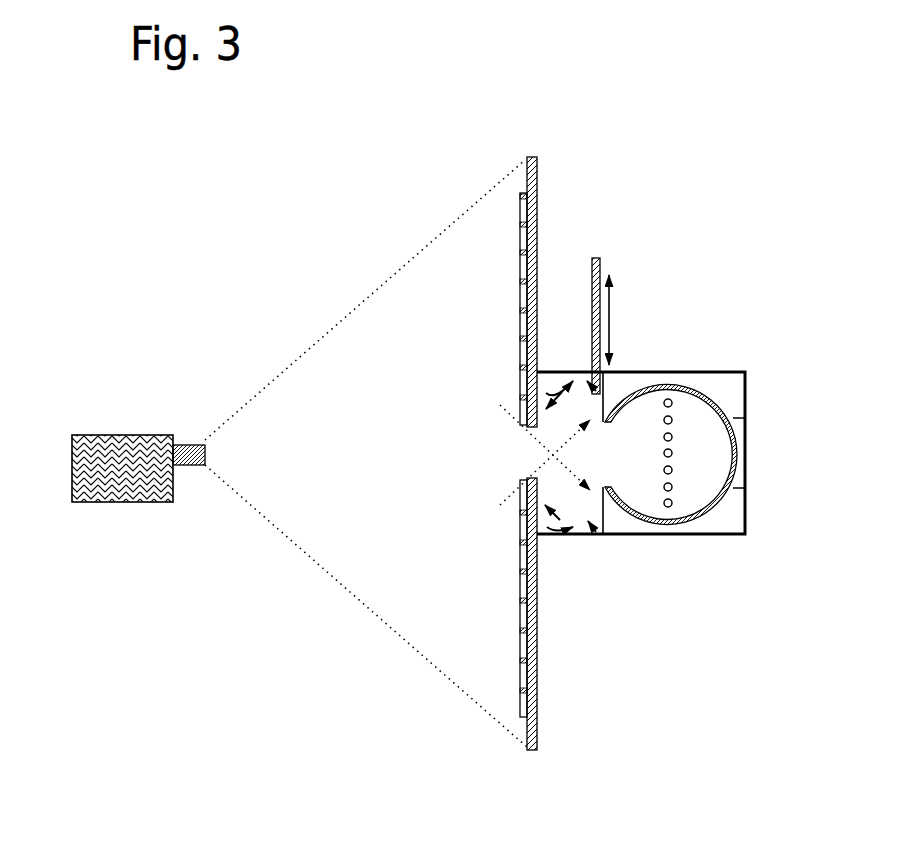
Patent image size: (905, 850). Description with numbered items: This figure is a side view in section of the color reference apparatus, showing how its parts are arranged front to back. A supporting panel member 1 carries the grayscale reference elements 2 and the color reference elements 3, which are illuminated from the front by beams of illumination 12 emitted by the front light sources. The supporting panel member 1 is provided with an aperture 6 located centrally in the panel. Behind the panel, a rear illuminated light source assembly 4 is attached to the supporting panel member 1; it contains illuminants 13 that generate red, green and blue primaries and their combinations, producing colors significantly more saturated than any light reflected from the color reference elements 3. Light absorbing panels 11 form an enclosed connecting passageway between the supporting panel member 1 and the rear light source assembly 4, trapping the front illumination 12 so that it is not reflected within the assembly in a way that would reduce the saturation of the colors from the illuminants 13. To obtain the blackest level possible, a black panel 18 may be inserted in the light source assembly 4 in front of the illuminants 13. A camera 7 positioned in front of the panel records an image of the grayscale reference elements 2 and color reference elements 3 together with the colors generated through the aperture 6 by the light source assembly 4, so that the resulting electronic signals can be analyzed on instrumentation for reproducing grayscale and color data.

The supporting panel member 1 is at (545, 672).
The grayscale reference elements 2 is at (521, 667).
The color reference elements 3 is at (518, 302).
The rear illuminated light source assembly 4 is at (750, 402).
The aperture 6 is at (521, 457).
The camera 7 is at (133, 504).
The light absorbing panels 11 is at (546, 393).
The beams of illumination 12 is at (494, 426).
The illuminants 13 is at (680, 422).
The black panel 18 is at (605, 267).